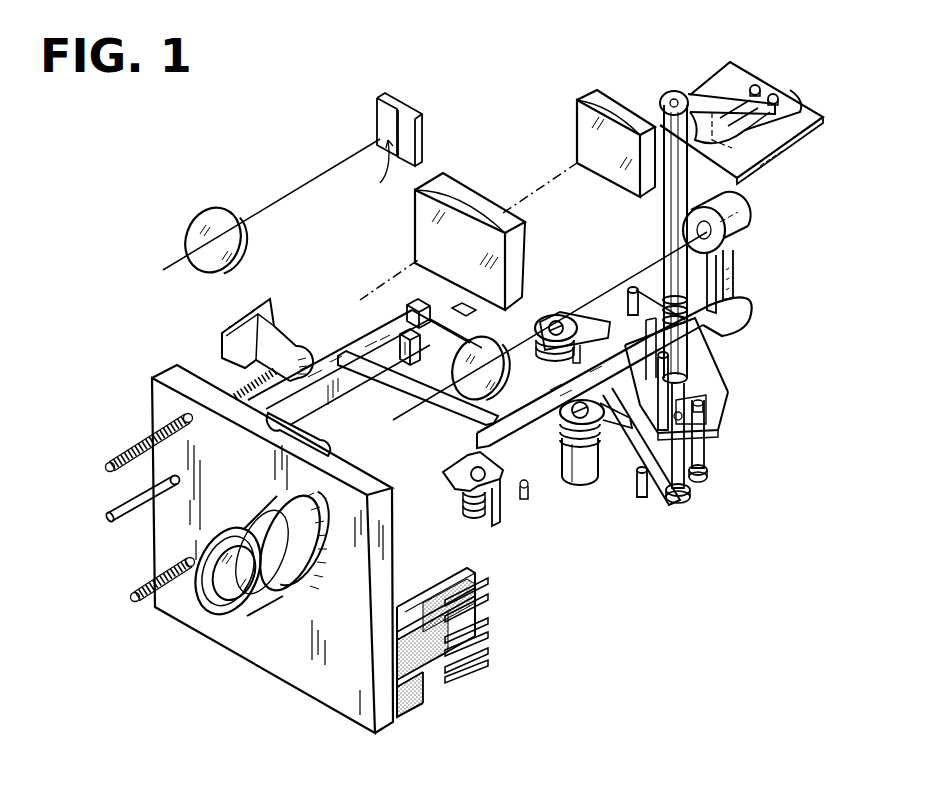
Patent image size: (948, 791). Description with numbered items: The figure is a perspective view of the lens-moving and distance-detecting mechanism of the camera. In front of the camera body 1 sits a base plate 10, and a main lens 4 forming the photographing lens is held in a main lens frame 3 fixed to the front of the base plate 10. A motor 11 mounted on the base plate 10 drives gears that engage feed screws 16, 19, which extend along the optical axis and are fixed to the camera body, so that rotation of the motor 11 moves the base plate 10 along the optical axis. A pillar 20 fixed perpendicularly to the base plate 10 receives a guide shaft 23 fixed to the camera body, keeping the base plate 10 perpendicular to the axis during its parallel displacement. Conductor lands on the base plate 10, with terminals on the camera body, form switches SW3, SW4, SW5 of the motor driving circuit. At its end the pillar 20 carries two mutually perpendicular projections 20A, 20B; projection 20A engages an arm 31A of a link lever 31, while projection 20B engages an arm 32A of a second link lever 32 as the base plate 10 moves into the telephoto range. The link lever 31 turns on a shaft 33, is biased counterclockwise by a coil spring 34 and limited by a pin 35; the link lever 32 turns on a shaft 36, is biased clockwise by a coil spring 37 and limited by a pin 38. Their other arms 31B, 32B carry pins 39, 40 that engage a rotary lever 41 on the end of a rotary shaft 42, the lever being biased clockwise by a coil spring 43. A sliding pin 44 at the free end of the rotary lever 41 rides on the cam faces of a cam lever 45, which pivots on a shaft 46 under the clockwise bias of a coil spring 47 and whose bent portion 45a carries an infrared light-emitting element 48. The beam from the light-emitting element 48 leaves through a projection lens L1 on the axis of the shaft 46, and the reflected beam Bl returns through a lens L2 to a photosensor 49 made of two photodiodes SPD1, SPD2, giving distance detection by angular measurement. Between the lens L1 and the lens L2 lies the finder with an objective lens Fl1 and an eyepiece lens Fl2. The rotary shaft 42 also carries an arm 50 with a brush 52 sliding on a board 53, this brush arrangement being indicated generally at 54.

The camera body 1 is at (235, 315).
The main lens frame 3 is at (282, 570).
The main lens 4 is at (233, 593).
The base plate 10 is at (200, 612).
The motor 11 is at (330, 438).
The feed screw 16 is at (123, 450).
The feed screw 19 is at (140, 587).
The pillar 20 is at (322, 377).
The projection 20A is at (425, 357).
The projection 20B is at (407, 308).
The guide shaft 23 is at (115, 507).
The link lever 31 is at (548, 322).
The arm 31A is at (460, 330).
The arm 31B is at (710, 472).
The link lever 32 is at (580, 467).
The arm 32A is at (397, 377).
The arm 32B is at (663, 477).
The shaft 33 is at (556, 320).
The coil spring 34 is at (580, 340).
The pin 35 is at (645, 503).
The shaft 36 is at (557, 427).
The coil spring 37 is at (593, 427).
The pin 38 is at (632, 287).
The pin 39 is at (703, 443).
The pin 40 is at (692, 483).
The rotary lever 41 is at (700, 378).
The rotary shaft 42 is at (667, 207).
The coil spring 43 is at (660, 300).
The sliding pin 44 is at (710, 413).
The cam lever 45 is at (693, 340).
The bent portion 45a is at (737, 283).
The shaft 46 is at (470, 473).
The coil spring 47 is at (480, 507).
The light-emitting element 48 is at (737, 213).
The photosensor 49 is at (378, 100).
The arm 50 is at (720, 87).
The brush 52 is at (780, 117).
The board 53 is at (820, 127).
The adjusting assembly 54 is at (847, 97).
The projection lens L1 is at (477, 382).
The receiving lens L2 is at (197, 213).
The objective lens Fl1 is at (467, 207).
The eyepiece lens Fl2 is at (582, 133).
The photodiode SPD1 is at (395, 100).
The photodiode SPD2 is at (420, 117).
The light beam Bl is at (370, 171).
The switch SW3 is at (487, 588).
The switch SW4 is at (490, 620).
The switch SW5 is at (493, 652).